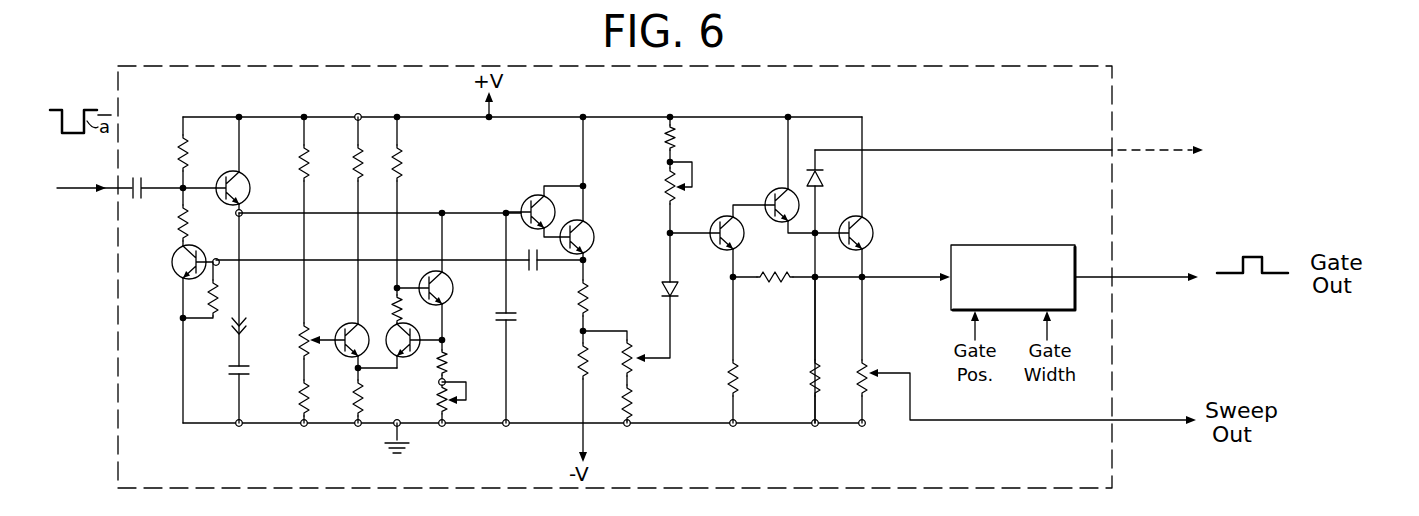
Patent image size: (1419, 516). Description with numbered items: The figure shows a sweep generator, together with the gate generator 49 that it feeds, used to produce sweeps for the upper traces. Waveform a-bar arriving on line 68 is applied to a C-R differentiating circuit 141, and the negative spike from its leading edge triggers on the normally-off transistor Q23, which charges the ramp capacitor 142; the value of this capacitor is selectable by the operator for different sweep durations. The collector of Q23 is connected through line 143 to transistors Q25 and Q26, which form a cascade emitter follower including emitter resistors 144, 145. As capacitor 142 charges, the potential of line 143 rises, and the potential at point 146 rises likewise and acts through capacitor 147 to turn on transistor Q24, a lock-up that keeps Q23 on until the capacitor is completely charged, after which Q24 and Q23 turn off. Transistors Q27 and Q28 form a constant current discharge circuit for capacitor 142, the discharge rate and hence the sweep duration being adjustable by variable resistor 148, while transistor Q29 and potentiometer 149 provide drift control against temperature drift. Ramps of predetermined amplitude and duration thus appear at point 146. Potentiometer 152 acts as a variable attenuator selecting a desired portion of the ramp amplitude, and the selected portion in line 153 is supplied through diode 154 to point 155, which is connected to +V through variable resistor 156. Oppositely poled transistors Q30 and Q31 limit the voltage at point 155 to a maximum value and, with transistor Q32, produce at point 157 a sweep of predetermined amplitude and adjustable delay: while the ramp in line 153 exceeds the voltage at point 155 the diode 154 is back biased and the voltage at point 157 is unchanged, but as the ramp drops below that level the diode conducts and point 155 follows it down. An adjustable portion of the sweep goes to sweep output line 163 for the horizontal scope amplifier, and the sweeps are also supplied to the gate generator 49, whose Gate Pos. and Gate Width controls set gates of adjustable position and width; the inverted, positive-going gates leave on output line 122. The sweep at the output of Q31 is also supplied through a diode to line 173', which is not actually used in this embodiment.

The line 68 is at (92, 186).
The C-R differentiating circuit 141 is at (176, 155).
The ramp capacitor 142 is at (228, 374).
The line 143 is at (469, 211).
The emitter resistor 144 is at (528, 325).
The emitter resistor 145 is at (575, 362).
The point 146 is at (590, 262).
The capacitor 147 is at (536, 270).
The variable resistor 148 is at (440, 403).
The potentiometer 149 is at (303, 345).
The potentiometer 152 is at (637, 367).
The line 153 is at (672, 325).
The diode 154 is at (660, 295).
The point 155 is at (673, 237).
The variable resistor 156 is at (661, 191).
The point 157 is at (864, 281).
The sweep output line 163 is at (1144, 418).
The line 173' is at (1009, 129).
The output line 122 is at (1162, 274).
The gate generator 49 is at (1012, 246).
The transistor Q23 is at (250, 182).
The transistor Q24 is at (172, 262).
The transistor Q25 is at (526, 199).
The transistor Q26 is at (592, 238).
The transistor Q27 is at (453, 298).
The transistor Q28 is at (418, 352).
The transistor Q29 is at (340, 326).
The transistor Q30 is at (746, 237).
The transistor Q31 is at (766, 195).
The transistor Q32 is at (871, 237).